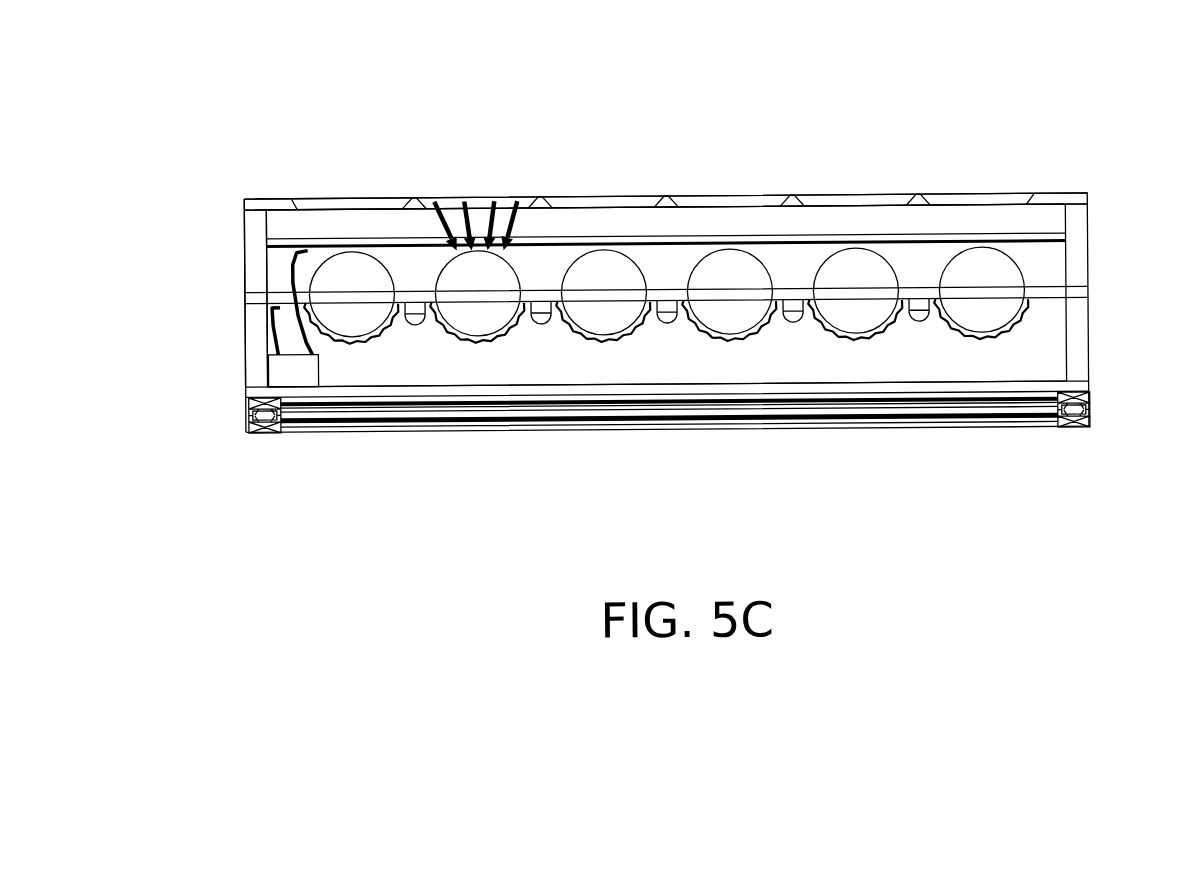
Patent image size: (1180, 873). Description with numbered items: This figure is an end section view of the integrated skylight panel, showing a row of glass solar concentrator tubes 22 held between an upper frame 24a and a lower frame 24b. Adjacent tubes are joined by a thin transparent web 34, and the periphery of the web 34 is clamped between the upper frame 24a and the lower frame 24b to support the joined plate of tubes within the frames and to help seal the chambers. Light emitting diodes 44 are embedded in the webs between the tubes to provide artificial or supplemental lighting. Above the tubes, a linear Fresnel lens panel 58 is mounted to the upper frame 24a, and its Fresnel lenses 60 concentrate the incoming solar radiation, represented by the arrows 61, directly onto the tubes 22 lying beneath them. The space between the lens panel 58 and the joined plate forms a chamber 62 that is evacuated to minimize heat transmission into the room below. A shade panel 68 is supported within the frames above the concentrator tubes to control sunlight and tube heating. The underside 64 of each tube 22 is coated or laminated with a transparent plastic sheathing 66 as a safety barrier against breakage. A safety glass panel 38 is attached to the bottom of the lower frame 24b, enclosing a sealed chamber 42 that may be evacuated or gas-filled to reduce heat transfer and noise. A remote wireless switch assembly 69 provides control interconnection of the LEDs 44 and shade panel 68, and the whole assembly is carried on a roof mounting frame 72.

The solar concentrator tubes 22 is at (522, 268).
The upper frame 24a is at (257, 235).
The lower frame 24b is at (257, 339).
The web 34 is at (922, 302).
The safety glass panel 38 is at (885, 389).
The chamber 42 is at (685, 350).
The light emitting diodes 44 is at (922, 324).
The linear Fresnel lens panel 58 is at (273, 196).
The Fresnel lenses 60 is at (358, 200).
The arrows 61 is at (517, 222).
The chamber 62 is at (746, 222).
The underside 64 is at (493, 340).
The transparent plastic sheathing 66 is at (472, 339).
The shade panel 68 is at (836, 241).
The remote wireless switch assembly 69 is at (298, 370).
The roof mounting frame 72 is at (1083, 433).